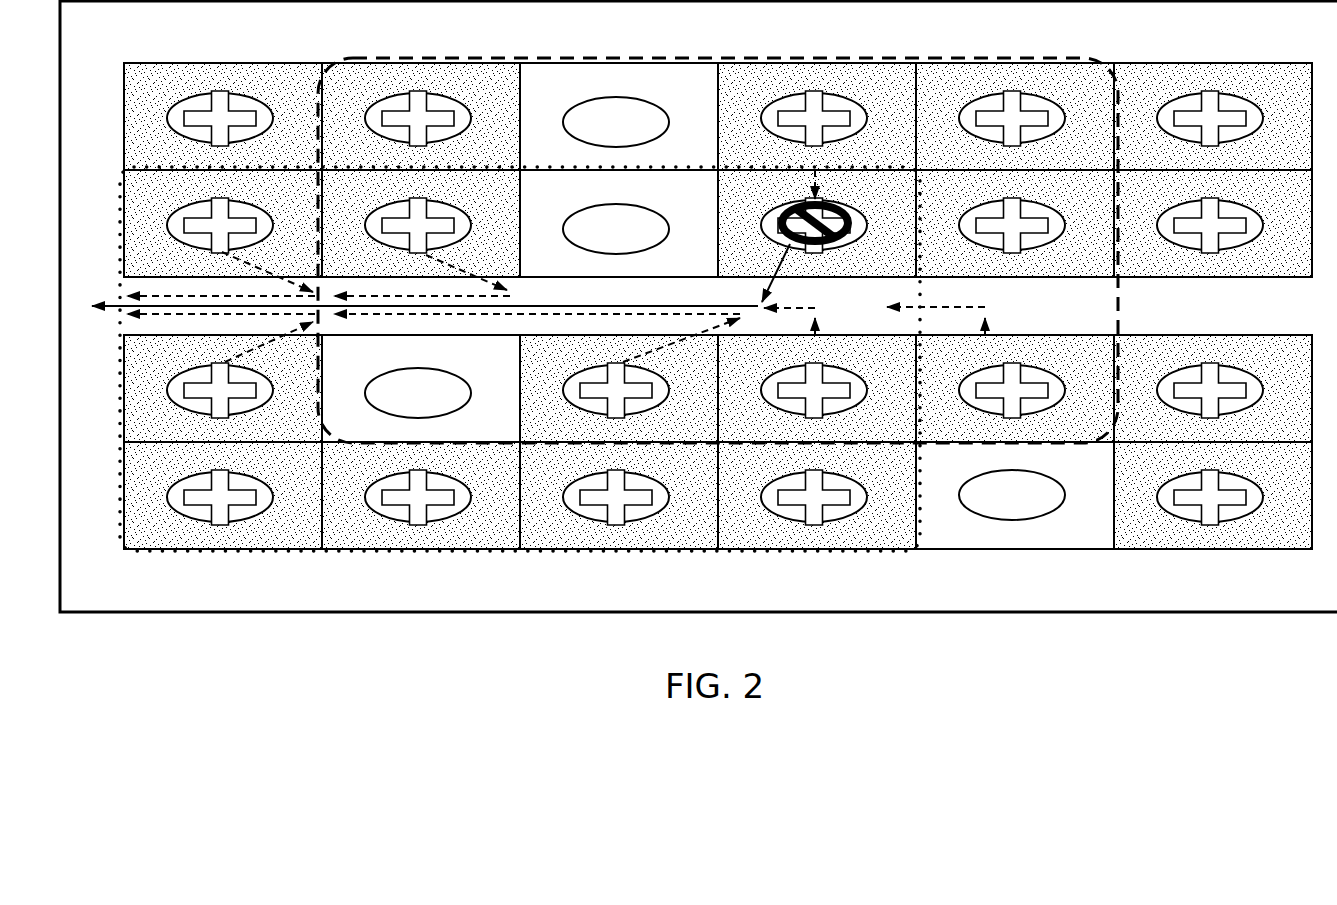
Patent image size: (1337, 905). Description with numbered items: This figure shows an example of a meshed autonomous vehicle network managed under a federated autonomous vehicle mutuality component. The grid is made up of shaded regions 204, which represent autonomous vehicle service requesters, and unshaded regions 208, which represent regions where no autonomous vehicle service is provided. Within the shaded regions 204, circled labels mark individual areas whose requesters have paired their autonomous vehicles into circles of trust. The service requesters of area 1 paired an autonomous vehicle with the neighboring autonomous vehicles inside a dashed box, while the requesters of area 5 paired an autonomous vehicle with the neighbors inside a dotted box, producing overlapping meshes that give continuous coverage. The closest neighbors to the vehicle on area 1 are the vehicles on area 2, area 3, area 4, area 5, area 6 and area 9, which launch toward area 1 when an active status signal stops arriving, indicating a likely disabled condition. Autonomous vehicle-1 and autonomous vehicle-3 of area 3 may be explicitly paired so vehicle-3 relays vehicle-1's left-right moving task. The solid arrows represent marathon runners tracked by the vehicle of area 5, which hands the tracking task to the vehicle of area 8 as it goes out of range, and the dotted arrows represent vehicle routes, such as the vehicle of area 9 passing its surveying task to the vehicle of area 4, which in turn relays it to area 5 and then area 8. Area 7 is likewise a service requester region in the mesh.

The shaded regions 204 is at (310, 161).
The unshaded regions 208 is at (575, 97).
The area 1 is at (835, 253).
The area 2 is at (862, 162).
The area 3 is at (997, 269).
The area 4 is at (835, 344).
The area 5 is at (681, 349).
The area 6 is at (468, 260).
The area 7 is at (267, 261).
The area 8 is at (269, 351).
The area 9 is at (1045, 349).